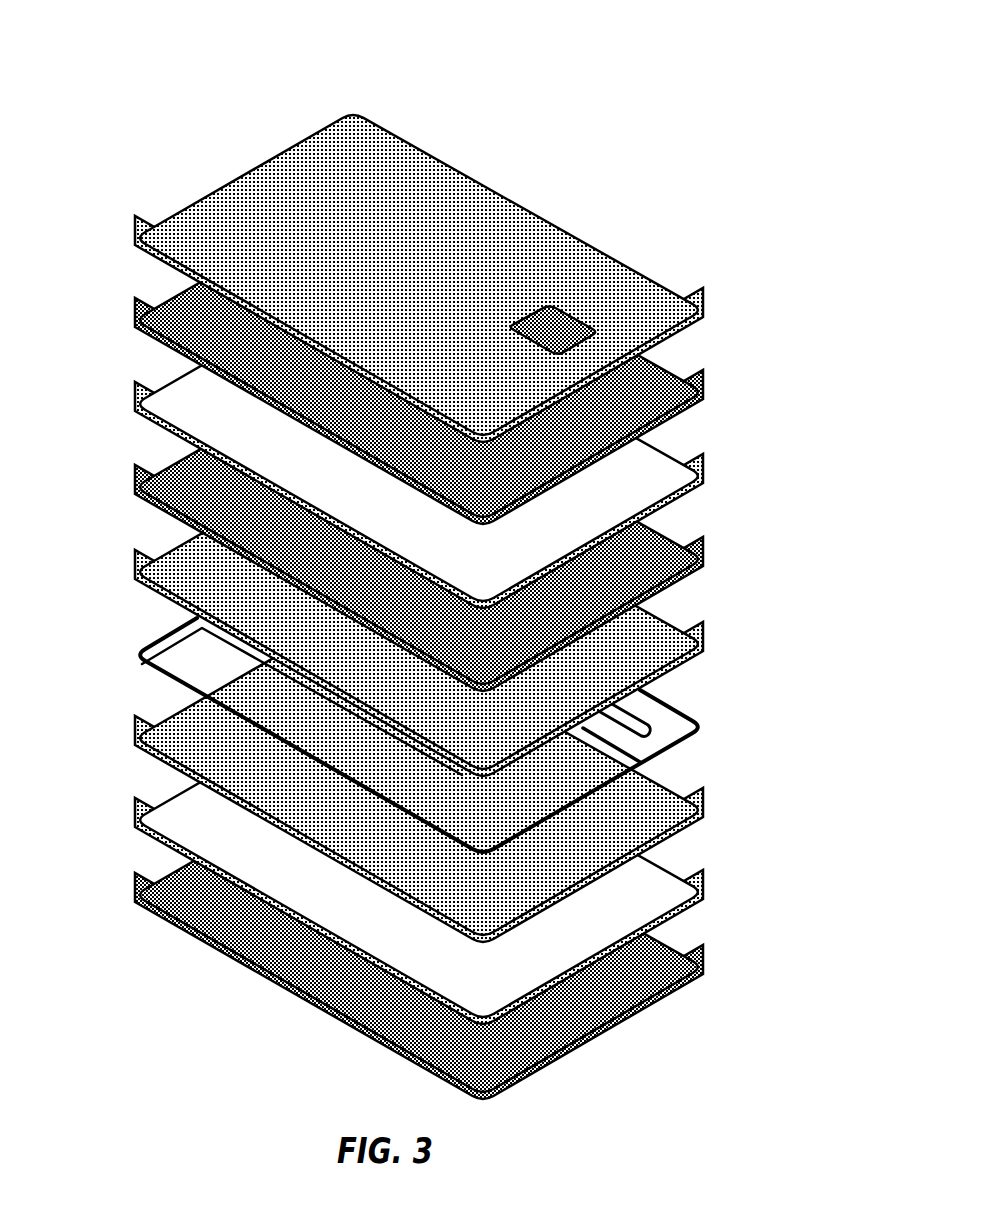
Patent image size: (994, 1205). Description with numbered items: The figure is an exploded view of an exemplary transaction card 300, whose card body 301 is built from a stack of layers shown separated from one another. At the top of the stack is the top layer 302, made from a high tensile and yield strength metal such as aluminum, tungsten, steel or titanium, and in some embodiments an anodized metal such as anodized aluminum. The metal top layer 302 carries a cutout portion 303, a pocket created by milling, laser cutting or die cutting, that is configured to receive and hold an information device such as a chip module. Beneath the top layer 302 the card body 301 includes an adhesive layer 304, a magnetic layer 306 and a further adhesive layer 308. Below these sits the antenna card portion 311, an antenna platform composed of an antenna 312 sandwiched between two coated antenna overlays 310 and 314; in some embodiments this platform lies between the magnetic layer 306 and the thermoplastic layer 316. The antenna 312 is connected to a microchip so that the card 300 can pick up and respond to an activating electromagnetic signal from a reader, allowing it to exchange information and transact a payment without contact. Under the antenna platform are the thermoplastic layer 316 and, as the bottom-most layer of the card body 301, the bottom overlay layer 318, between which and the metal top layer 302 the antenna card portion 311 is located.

The card 300 is at (562, 108).
The card body 301 is at (695, 1006).
The top layer 302 is at (368, 278).
The cutout portion 303 is at (558, 317).
The adhesive layer 304 is at (129, 325).
The magnetic layer 306 is at (130, 409).
The adhesive layer 308 is at (129, 492).
The antenna overlay 310 is at (129, 577).
The antenna card portion 311 is at (688, 843).
The antenna 312 is at (129, 659).
The antenna overlay 314 is at (129, 743).
The thermoplastic layer 316 is at (129, 825).
The overlay layer 318 is at (129, 901).